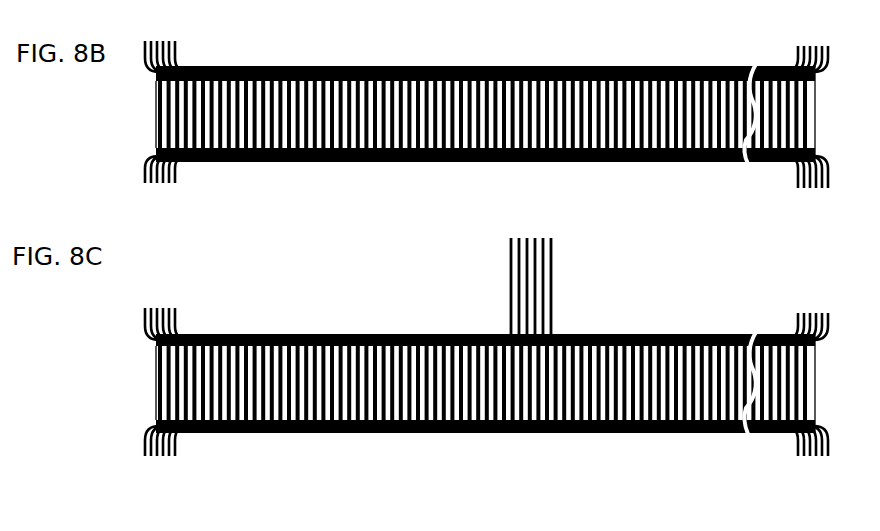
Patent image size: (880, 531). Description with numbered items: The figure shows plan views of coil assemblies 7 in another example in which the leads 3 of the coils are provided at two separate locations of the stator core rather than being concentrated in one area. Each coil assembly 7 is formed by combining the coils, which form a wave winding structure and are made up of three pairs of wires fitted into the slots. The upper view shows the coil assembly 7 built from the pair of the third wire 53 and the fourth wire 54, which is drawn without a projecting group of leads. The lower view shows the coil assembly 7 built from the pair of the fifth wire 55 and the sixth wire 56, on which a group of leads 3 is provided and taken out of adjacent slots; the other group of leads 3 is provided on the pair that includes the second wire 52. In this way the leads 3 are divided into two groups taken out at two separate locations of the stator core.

In FIG. 8B, the coil assembly 7 is at (672, 46).
In FIG. 8C, the coil assembly 7 is at (667, 300).
In FIG. 8C, the lead 3 is at (545, 229).
In FIG. 8B, the second wire 52 is at (156, 0).
In FIG. 8B, the third wire 53 is at (169, 32).
In FIG. 8B, the fourth wire 54 is at (169, 180).
In FIG. 8C, the fifth wire 55 is at (169, 299).
In FIG. 8C, the sixth wire 56 is at (169, 450).